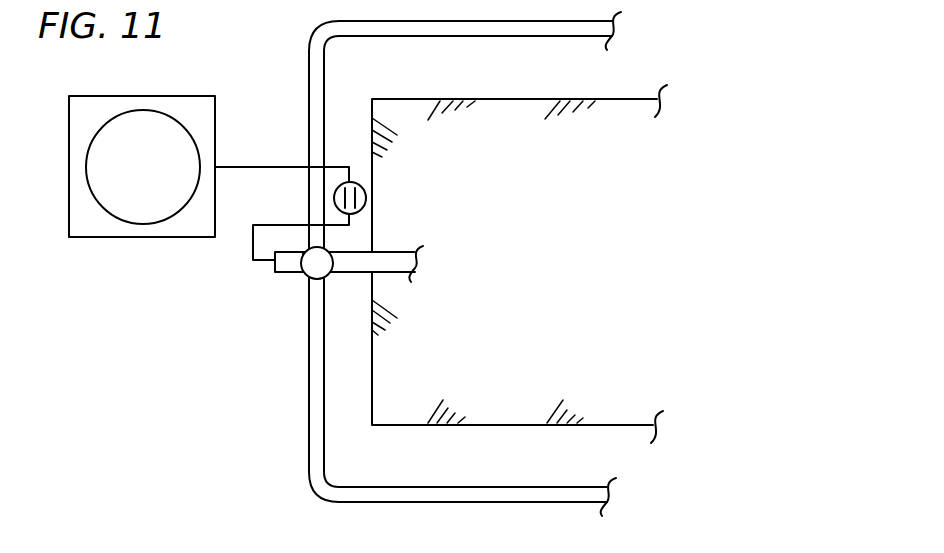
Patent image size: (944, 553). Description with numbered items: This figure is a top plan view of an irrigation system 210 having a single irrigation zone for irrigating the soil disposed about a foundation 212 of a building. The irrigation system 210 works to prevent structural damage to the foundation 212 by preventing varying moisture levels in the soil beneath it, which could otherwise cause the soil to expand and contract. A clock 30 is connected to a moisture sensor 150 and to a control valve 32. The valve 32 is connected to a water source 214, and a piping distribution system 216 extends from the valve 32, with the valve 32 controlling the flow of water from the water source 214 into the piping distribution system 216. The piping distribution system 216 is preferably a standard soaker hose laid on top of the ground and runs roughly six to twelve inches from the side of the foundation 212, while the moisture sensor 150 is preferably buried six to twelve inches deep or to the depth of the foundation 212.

The clock 30 is at (213, 135).
The control valve 32 is at (326, 276).
The moisture sensor 150 is at (366, 194).
The irrigation system 210 is at (296, 418).
The foundation 212 is at (372, 392).
The water source 214 is at (394, 258).
The piping distribution system 216 is at (309, 358).